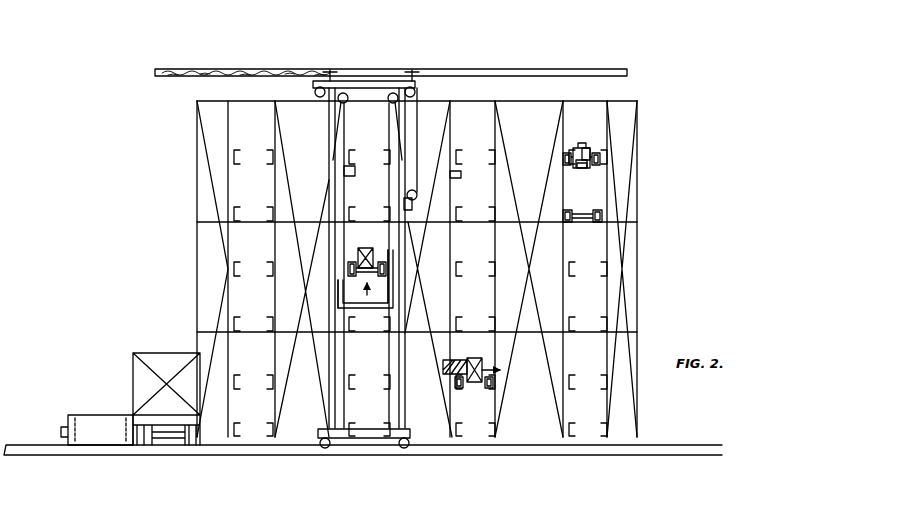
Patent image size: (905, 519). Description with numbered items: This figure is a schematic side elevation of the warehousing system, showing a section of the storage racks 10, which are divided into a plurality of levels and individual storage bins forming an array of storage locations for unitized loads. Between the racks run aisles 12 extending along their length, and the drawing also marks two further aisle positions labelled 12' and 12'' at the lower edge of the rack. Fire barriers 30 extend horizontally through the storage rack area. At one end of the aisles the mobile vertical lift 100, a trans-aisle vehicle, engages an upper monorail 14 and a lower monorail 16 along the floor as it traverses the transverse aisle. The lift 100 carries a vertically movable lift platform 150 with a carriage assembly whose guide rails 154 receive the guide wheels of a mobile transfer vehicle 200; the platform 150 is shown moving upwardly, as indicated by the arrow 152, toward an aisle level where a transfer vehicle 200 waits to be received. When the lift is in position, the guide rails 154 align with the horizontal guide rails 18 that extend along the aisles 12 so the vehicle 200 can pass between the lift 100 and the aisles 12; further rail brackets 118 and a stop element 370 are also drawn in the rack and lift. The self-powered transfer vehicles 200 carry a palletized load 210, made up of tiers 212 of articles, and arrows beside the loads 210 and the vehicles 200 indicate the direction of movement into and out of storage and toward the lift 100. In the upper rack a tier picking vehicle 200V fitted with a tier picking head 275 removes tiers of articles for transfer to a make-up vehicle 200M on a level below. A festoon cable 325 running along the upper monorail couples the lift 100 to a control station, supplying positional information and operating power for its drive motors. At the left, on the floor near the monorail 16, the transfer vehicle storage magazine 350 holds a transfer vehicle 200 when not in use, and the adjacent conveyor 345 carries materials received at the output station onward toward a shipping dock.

The storage rack 10 is at (505, 158).
The aisle 12 is at (302, 317).
The storage compartment 12' is at (588, 313).
The storage compartment 12'' is at (475, 313).
The monorail 14 is at (632, 66).
The monorail 16 is at (672, 445).
The horizontal guide rails 18 is at (268, 152).
The fire barriers 30 is at (628, 222).
The mobile vertical lift 100 is at (408, 68).
The support brackets 118 is at (478, 150).
The lift platform 150 is at (352, 293).
The arrow 152 is at (372, 290).
The guide rails 154 is at (347, 296).
The mobile transfer vehicle 200 is at (366, 247).
The tier picking vehicle 200V is at (594, 153).
The make-up vehicle 200M is at (586, 217).
The palletized load 210 is at (450, 361).
The tiers 212 is at (583, 168).
The tier picking head 275 is at (598, 165).
The festoon cable 325 is at (240, 69).
The conveyor 345 is at (75, 415).
The transfer vehicle storage magazine 350 is at (112, 393).
The stop member 370 is at (352, 166).